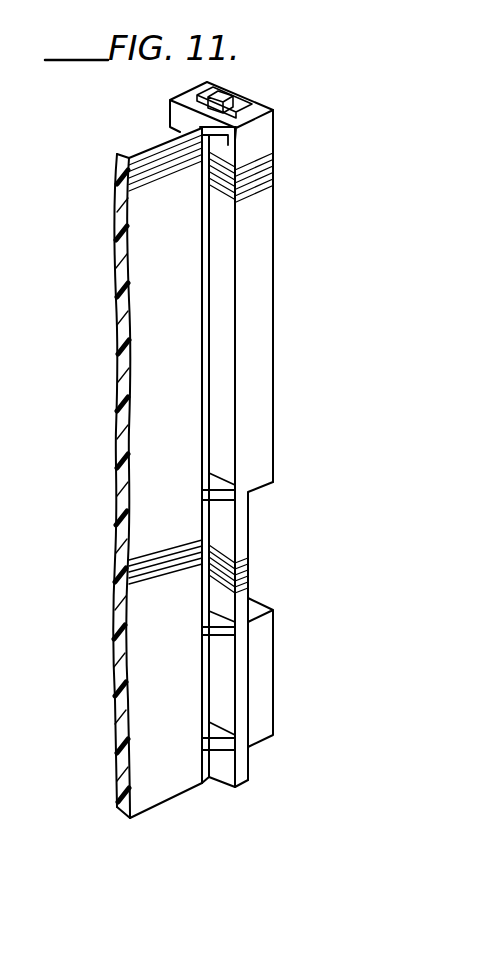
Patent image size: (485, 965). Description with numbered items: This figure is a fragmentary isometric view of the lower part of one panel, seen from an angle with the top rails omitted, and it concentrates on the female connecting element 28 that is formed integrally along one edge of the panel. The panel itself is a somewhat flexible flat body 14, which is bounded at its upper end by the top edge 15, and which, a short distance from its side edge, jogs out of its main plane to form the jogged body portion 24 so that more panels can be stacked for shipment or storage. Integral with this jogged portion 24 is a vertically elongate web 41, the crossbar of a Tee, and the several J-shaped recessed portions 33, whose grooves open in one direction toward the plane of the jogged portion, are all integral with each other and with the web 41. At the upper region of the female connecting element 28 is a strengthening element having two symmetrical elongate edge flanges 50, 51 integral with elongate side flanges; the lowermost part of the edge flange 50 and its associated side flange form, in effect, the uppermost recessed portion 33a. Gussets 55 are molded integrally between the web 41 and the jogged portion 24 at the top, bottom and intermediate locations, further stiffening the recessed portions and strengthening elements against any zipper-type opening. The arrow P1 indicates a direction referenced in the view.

The flat body 14 is at (134, 425).
The top edge 15 is at (117, 151).
The jogged body portion 24 is at (202, 373).
The female connecting element 28 is at (274, 284).
The recessed portion 33 is at (271, 678).
The uppermost recessed portion 33a is at (266, 451).
The web 41 is at (207, 243).
The edge flange 50 is at (257, 105).
The edge flange 51 is at (227, 91).
The gussets 55 is at (170, 108).
The direction arrow P1 is at (100, 347).